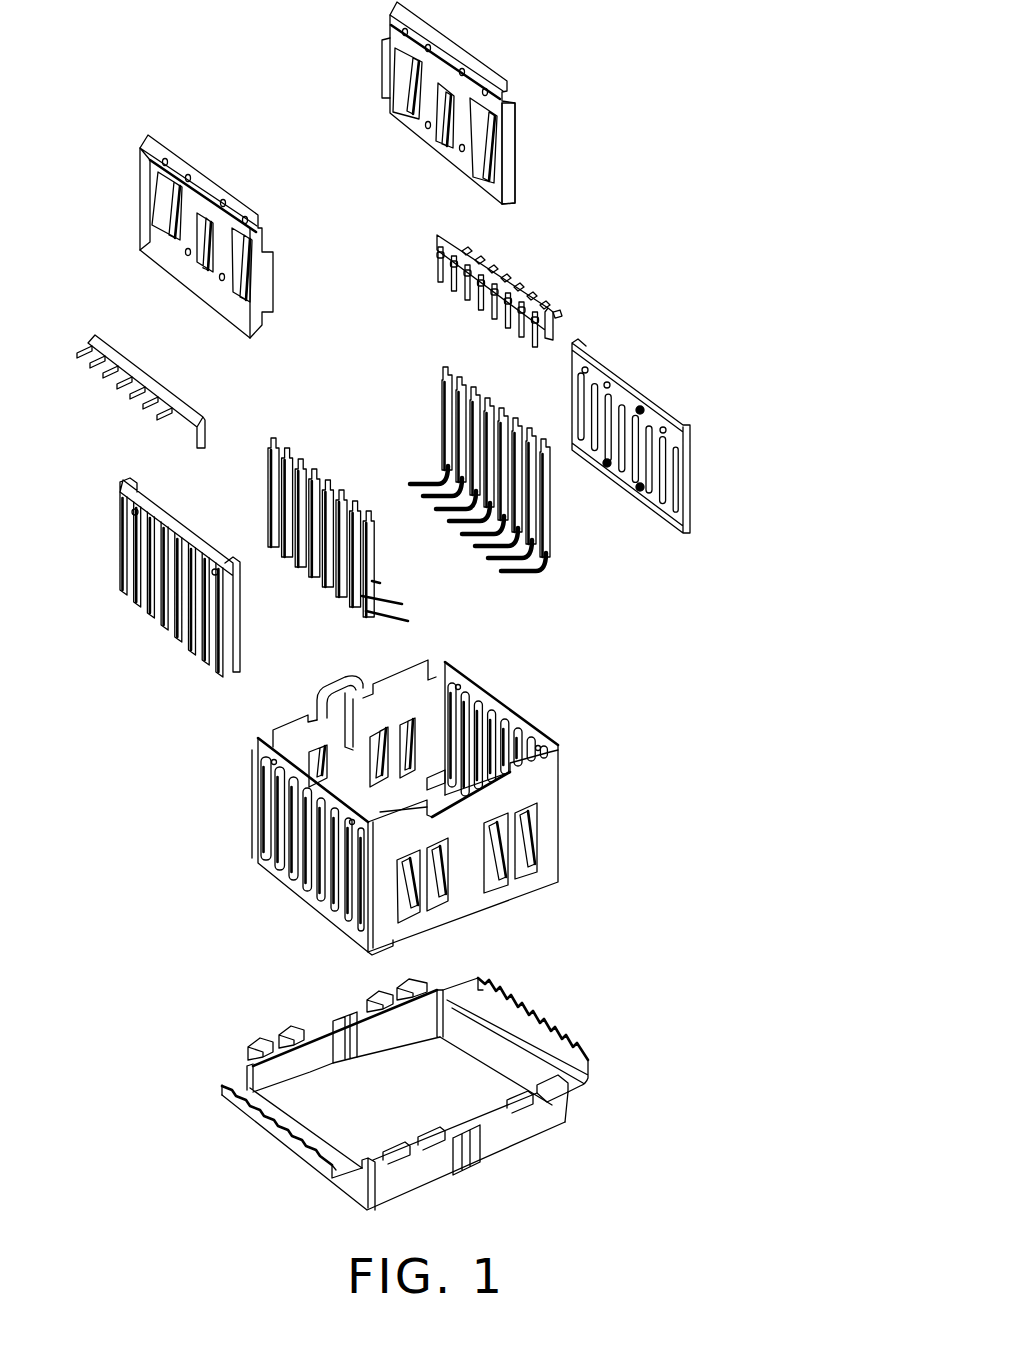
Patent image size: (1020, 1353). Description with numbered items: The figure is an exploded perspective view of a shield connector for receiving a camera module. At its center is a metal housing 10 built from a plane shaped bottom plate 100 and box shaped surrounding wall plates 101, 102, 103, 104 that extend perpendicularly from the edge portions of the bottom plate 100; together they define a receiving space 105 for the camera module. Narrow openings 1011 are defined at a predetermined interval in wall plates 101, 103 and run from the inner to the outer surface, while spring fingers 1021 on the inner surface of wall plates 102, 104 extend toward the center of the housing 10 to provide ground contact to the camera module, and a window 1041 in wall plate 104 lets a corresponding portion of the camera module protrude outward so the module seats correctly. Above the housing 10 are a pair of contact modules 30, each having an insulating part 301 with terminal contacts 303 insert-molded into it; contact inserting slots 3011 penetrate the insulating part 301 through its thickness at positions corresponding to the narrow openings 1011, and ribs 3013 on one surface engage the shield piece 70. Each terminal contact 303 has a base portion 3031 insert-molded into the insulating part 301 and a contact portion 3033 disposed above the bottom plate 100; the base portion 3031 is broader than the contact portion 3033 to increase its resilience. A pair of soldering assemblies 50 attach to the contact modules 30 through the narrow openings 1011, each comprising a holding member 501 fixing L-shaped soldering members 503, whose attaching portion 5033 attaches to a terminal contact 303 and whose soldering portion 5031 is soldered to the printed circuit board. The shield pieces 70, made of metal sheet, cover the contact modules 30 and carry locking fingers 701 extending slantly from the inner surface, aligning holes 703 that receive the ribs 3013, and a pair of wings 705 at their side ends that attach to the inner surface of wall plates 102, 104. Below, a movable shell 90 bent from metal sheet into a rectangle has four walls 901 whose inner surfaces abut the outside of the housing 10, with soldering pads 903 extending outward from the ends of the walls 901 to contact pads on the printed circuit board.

The housing 10 is at (629, 746).
The bottom plate 100 is at (505, 905).
The surrounding wall plate 101 is at (258, 865).
The narrow openings 1011 is at (318, 887).
The surrounding wall plate 102 is at (550, 805).
The spring fingers 1021 is at (417, 900).
The surrounding wall plate 103 is at (487, 703).
The surrounding wall plate 104 is at (285, 732).
The window 1041 is at (347, 692).
The receiving space 105 is at (441, 811).
The contact module 30 is at (777, 605).
The insulating part 301 is at (704, 550).
The contact inserting slots 3011 is at (672, 482).
The ribs 3013 is at (637, 408).
The terminal contacts 303 is at (549, 585).
The base portion 3031 is at (540, 498).
The contact portion 3033 is at (510, 563).
The soldering assembly 50 is at (595, 254).
The holding member 501 is at (138, 372).
The soldering member 503 is at (92, 366).
The soldering portion 5031 is at (480, 252).
The attaching portion 5033 is at (453, 287).
The shield piece 70 is at (559, 81).
The locking fingers 701 is at (475, 155).
The aligning holes 703 is at (458, 62).
The wings 705 is at (503, 153).
The movable shell 90 is at (582, 1016).
The walls 901 is at (552, 1122).
The soldering pads 903 is at (222, 1085).